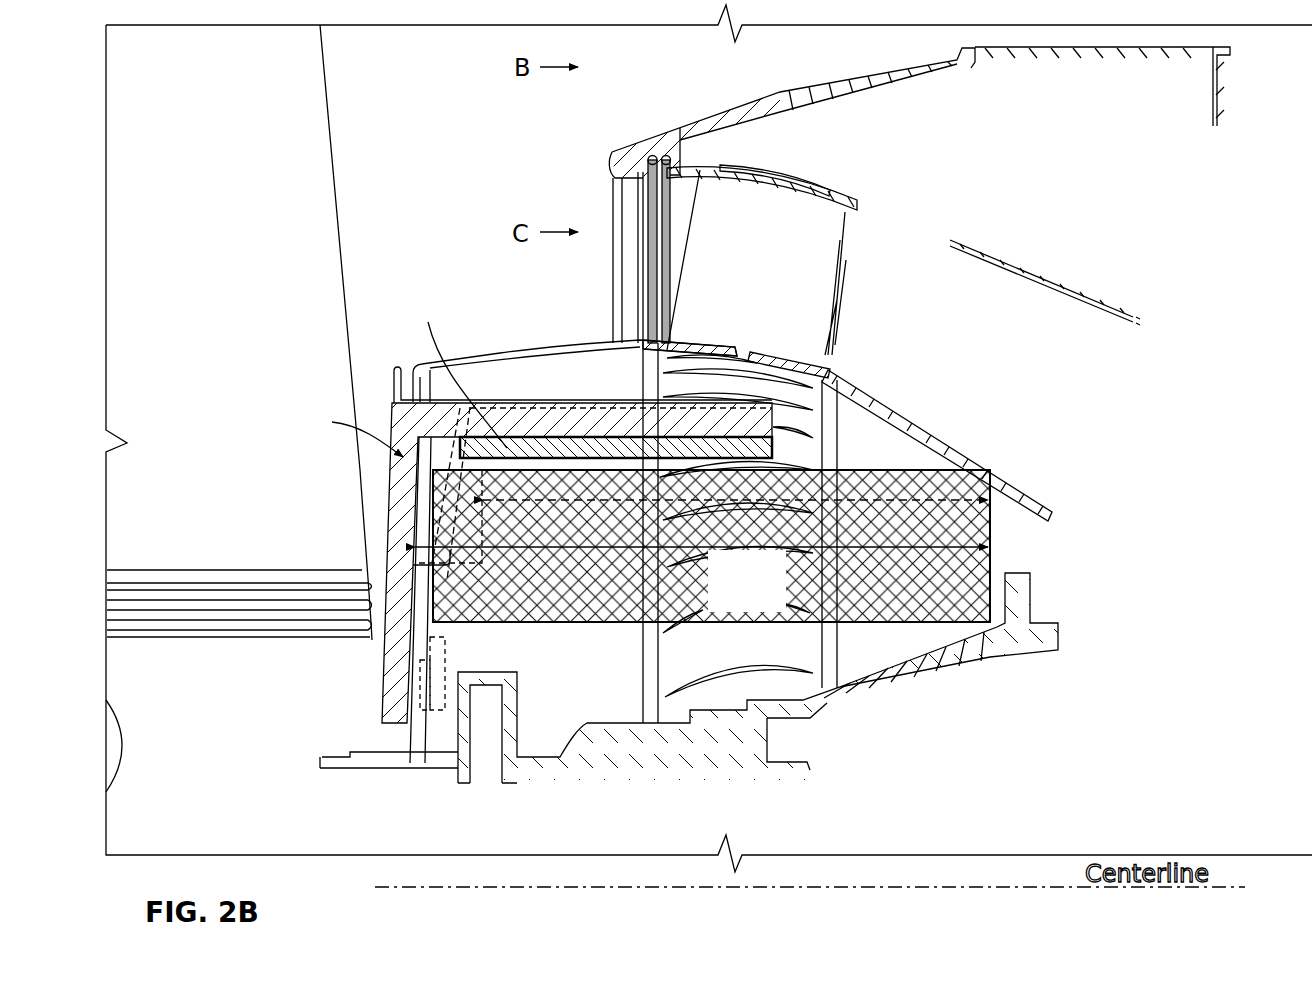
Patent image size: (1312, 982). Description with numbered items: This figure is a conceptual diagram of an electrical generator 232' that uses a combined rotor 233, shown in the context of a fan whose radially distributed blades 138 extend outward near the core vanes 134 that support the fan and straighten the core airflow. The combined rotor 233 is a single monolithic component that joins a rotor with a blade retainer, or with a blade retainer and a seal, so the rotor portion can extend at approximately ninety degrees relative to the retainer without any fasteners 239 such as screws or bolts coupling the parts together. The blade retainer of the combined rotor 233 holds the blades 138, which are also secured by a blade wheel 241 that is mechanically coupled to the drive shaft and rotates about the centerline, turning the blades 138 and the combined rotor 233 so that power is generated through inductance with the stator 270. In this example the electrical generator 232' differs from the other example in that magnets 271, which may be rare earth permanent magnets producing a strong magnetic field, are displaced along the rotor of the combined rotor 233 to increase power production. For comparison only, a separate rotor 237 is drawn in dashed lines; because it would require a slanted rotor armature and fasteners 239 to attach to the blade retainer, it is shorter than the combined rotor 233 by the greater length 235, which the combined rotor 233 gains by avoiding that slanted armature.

The blades 138 is at (330, 160).
The core vanes 134 is at (710, 263).
The electrical generator 232' is at (732, 469).
The separate rotor 237 is at (573, 402).
The magnets 271 is at (575, 369).
The combined rotor 233 is at (395, 497).
The blade wheel 241 is at (172, 580).
The stator 270 is at (766, 610).
The greater length 235 is at (433, 532).
The fasteners 239 is at (432, 655).